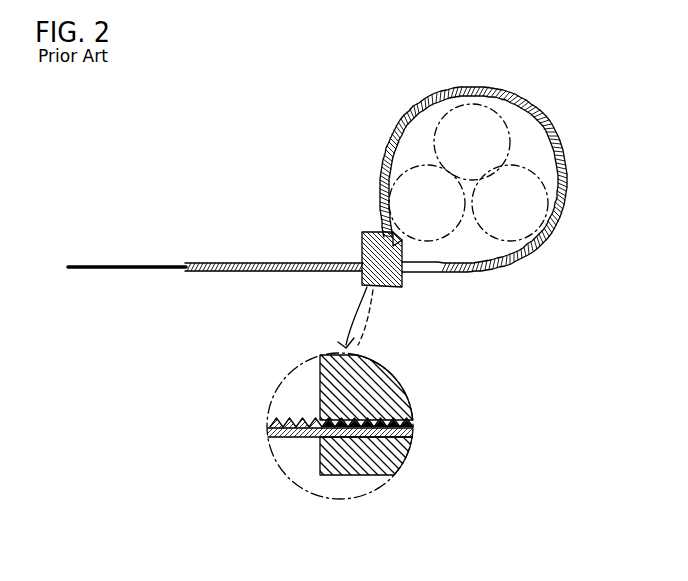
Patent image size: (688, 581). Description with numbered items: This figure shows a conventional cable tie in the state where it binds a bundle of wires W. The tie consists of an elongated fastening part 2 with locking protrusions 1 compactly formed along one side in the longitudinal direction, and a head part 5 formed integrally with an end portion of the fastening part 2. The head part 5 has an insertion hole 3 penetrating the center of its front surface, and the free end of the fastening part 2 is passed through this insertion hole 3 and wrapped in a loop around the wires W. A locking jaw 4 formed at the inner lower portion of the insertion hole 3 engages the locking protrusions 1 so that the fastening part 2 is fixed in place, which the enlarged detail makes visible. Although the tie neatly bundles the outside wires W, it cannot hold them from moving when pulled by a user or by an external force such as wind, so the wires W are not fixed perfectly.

The locking protrusions 1 is at (247, 262).
The fastening part 2 is at (145, 262).
The insertion hole 3 is at (403, 262).
The locking jaw 4 is at (395, 424).
The head part 5 is at (377, 287).
The wires W is at (467, 118).